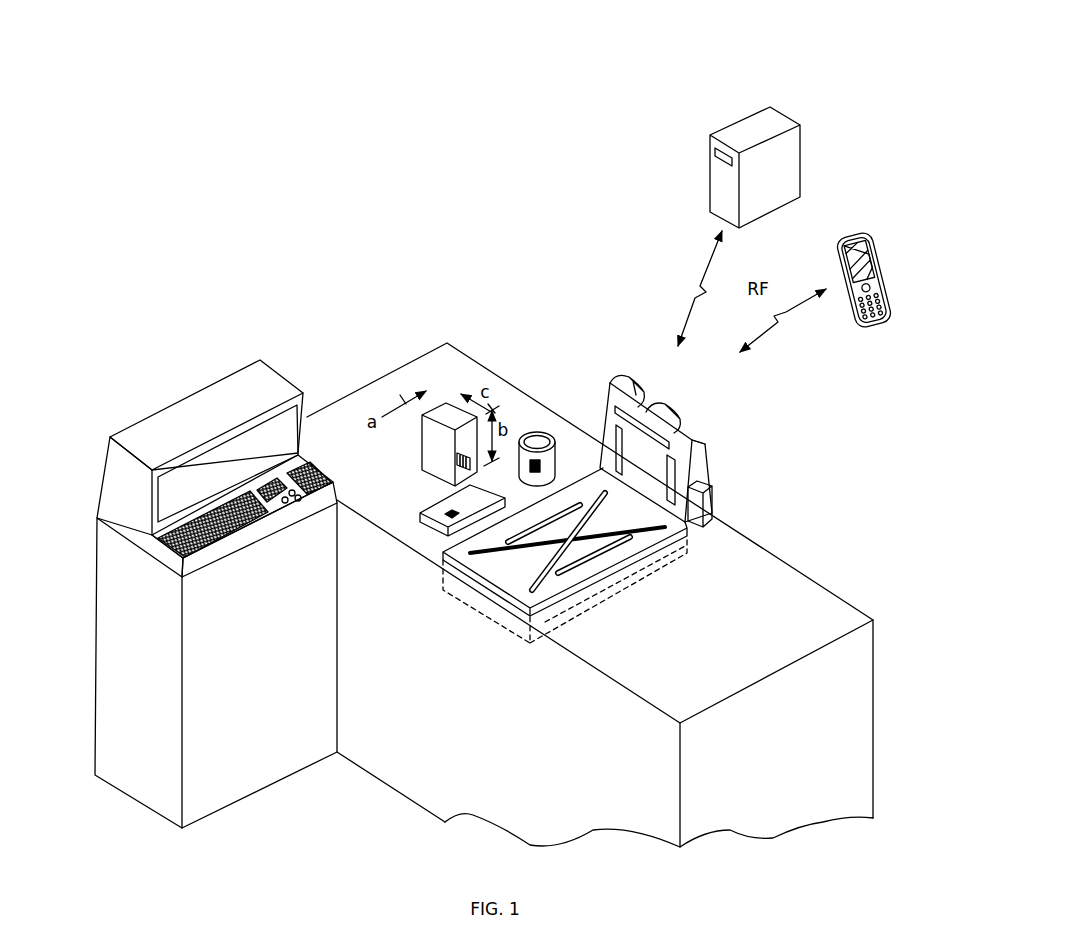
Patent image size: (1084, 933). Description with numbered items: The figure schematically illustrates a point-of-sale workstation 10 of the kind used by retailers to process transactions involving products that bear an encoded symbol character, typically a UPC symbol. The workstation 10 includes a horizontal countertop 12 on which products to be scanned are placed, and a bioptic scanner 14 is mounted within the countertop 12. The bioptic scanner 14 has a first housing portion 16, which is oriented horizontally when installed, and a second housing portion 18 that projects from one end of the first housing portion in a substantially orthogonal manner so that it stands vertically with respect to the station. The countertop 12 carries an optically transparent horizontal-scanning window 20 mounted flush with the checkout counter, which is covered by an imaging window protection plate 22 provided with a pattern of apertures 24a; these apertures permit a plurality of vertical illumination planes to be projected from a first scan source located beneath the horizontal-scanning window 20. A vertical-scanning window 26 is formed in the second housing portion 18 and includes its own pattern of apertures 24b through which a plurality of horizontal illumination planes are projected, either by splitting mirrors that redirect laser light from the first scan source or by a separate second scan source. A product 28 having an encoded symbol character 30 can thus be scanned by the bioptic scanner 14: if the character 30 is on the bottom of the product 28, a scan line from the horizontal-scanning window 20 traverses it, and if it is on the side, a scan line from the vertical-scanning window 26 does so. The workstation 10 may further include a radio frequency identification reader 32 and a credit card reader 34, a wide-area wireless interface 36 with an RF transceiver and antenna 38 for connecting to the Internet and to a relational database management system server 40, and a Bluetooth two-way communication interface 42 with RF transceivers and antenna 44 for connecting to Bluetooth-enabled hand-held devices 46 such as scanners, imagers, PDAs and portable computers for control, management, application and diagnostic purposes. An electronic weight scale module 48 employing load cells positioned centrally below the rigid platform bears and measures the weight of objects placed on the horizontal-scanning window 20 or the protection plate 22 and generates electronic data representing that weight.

The point-of-sale workstation 10 is at (606, 150).
The horizontal countertop 12 is at (590, 595).
The bioptic scanner 14 is at (714, 455).
The first housing portion 16 is at (622, 512).
The second housing portion 18 is at (602, 440).
The horizontal-scanning window 20 is at (545, 610).
The imaging window protection plate 22 is at (502, 568).
The pattern of apertures 24a is at (643, 531).
The pattern of apertures 24b is at (694, 441).
The vertical-scanning window 26 is at (645, 465).
The product 28 is at (447, 403).
The encoded symbol character 30 is at (457, 460).
The radio frequency identification (RFID) reader 32 is at (618, 380).
The credit card reader 34 is at (714, 503).
The wide-area wireless (WIFI) interface 36 is at (697, 283).
The RF transceiver and antenna 38 is at (652, 398).
The relational database management system (RDBMS) server 40 is at (793, 175).
The Bluetooth 2-way communication interface 42 is at (796, 322).
The RF transceivers and antenna 44 is at (670, 417).
The Bluetooth-enabled hand-held device 46 is at (882, 244).
The electronic weight scale module 48 is at (661, 566).